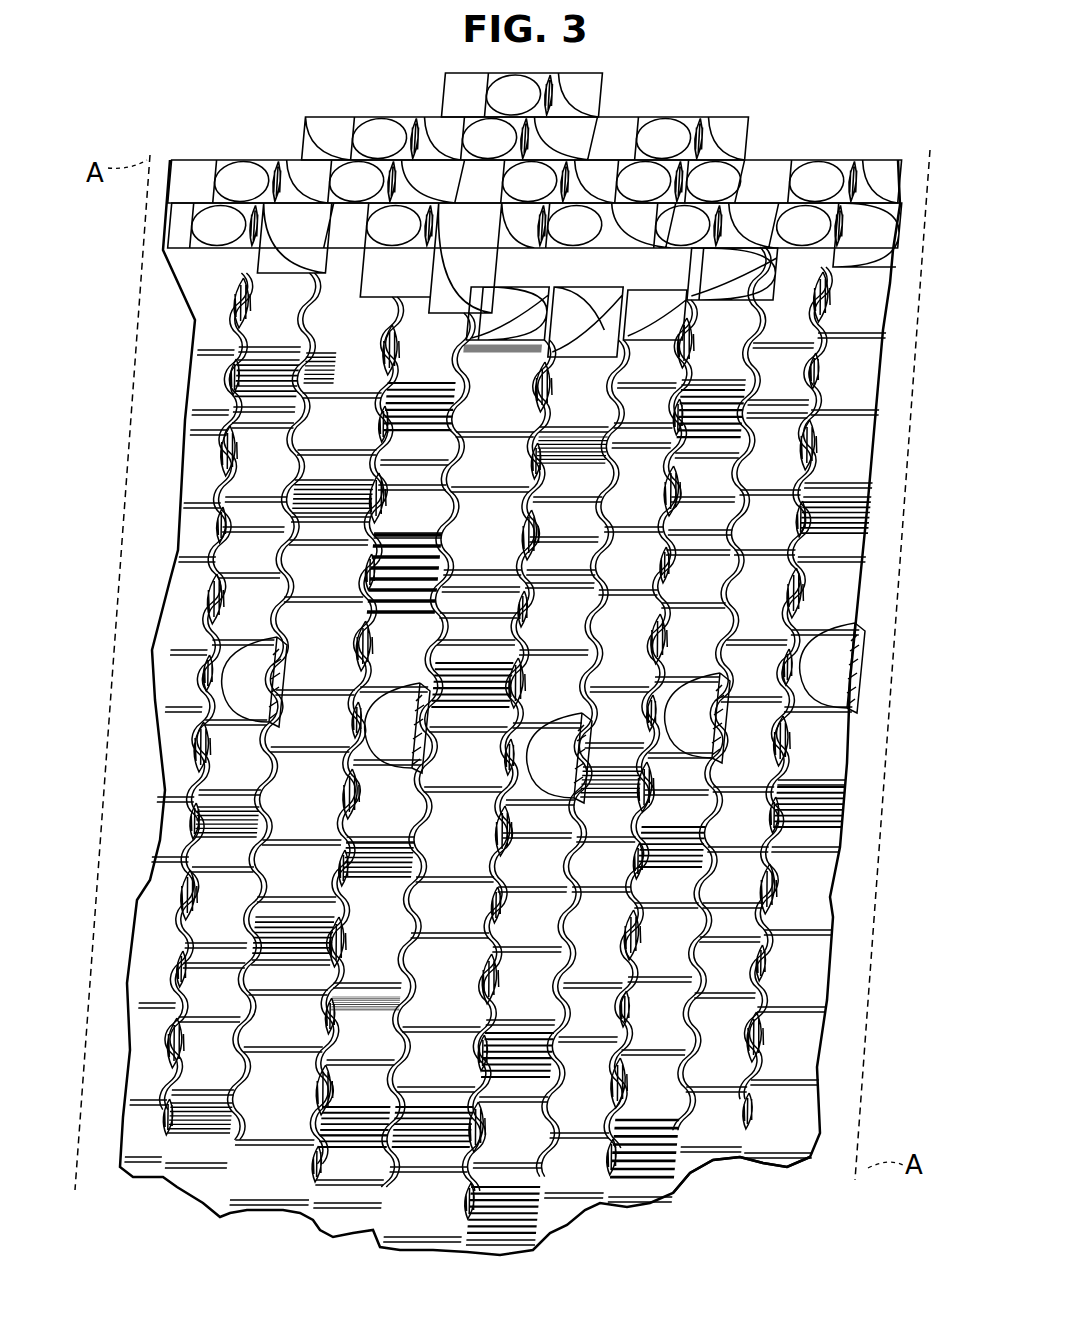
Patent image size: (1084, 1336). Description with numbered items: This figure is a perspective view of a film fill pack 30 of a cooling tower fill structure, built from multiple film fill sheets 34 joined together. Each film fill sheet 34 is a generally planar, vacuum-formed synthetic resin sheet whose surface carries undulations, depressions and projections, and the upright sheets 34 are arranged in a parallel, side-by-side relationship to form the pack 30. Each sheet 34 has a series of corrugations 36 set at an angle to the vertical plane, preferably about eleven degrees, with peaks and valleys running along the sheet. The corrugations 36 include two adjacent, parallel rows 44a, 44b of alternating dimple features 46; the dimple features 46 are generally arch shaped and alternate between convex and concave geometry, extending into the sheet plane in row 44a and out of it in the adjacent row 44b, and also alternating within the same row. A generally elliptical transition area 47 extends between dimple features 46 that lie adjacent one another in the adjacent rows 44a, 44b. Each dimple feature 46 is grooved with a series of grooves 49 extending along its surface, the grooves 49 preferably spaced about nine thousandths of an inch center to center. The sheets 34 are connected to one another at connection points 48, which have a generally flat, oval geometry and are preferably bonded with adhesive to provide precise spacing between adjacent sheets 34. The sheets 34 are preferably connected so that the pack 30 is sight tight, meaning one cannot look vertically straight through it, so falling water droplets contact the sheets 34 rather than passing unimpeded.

The film fill pack 30 is at (740, 85).
The film fill sheet 34 is at (680, 120).
The corrugations 36 is at (380, 112).
The row of alternating dimple features 44a is at (710, 1180).
The row of alternating dimple features 44b is at (780, 1170).
The dimple features 46 is at (302, 324).
The transition area 47 is at (195, 760).
The connection points 48 is at (885, 225).
The grooves 49 is at (230, 380).